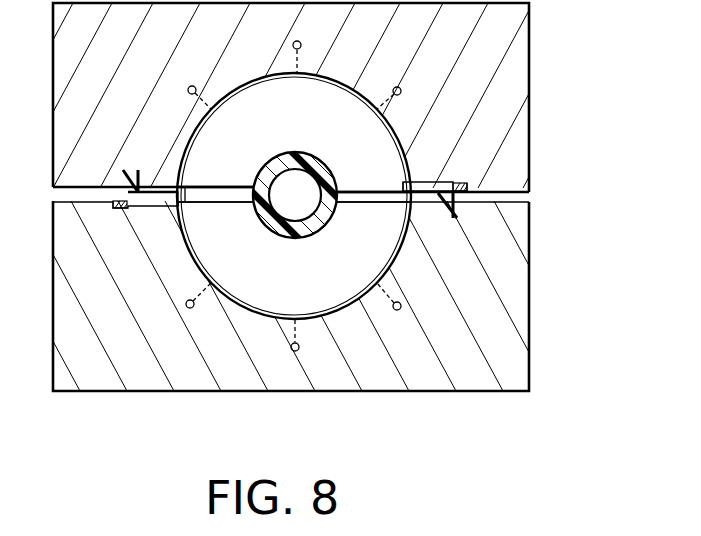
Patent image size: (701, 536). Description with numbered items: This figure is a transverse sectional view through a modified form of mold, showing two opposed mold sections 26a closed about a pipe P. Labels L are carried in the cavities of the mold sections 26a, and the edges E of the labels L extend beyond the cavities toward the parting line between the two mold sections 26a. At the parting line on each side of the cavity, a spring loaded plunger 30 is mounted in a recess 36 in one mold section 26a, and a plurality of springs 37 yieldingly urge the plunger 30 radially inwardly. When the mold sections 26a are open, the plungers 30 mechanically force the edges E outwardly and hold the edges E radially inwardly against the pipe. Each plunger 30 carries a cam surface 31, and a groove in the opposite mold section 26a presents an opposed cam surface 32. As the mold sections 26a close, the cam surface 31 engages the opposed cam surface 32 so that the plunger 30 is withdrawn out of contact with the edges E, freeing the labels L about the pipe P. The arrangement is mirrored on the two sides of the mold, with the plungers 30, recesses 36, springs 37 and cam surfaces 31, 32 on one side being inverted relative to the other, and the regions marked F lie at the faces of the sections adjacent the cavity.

The mold section 26a is at (529, 102).
The spring loaded plunger 30 is at (162, 206).
The cam surface 31 is at (144, 181).
The cam surface 32 is at (129, 176).
The recess 36 is at (115, 203).
The spring 37 is at (122, 208).
The pipe P is at (313, 155).
The label L is at (298, 74).
The edge E is at (185, 194).
The face F is at (186, 184).